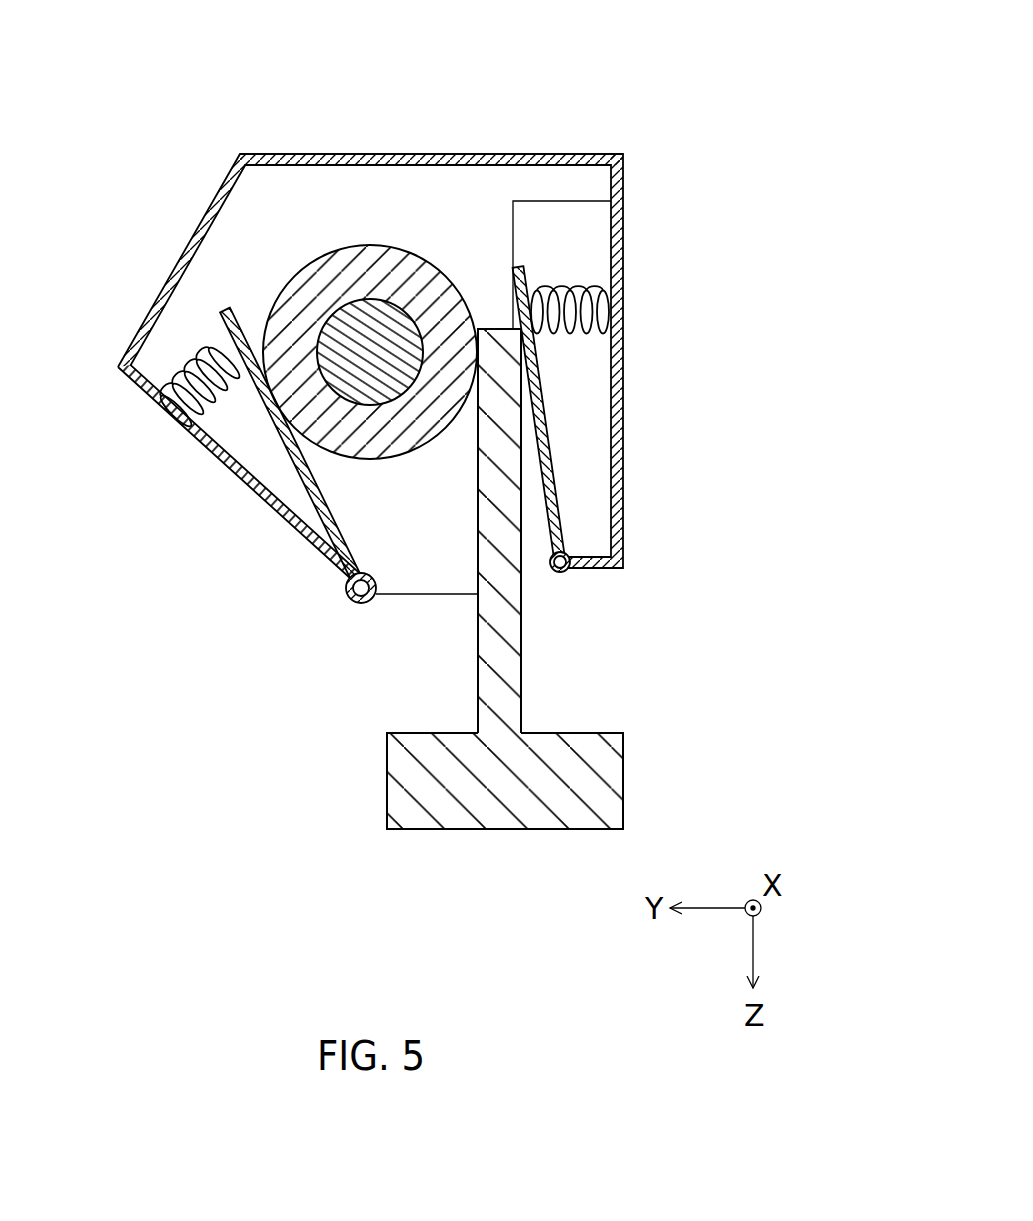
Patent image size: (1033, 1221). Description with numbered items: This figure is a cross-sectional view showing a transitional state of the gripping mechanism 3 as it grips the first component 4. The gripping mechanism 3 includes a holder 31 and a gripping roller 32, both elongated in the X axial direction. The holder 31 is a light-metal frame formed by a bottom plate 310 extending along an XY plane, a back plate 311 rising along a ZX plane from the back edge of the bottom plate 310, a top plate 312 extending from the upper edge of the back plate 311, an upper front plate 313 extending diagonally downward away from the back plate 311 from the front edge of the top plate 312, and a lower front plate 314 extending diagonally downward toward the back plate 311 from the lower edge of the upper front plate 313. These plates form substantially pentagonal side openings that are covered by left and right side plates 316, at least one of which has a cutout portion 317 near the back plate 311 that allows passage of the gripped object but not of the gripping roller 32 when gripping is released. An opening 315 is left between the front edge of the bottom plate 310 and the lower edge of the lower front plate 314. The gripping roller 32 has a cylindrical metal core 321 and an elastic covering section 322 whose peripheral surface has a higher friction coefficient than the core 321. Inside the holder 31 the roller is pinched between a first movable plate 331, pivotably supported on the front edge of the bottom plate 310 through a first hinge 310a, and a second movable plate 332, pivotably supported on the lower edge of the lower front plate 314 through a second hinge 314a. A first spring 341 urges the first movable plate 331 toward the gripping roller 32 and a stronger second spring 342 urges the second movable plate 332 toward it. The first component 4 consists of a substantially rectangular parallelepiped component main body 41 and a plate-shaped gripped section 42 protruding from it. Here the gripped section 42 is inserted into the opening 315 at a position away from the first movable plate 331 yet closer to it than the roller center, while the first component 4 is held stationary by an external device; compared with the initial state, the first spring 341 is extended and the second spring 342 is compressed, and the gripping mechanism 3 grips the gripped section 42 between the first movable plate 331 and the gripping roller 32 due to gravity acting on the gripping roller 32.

The gripping mechanism 3 is at (690, 107).
The holder 31 is at (184, 152).
The gripping roller 32 is at (340, 232).
The first component 4 is at (376, 766).
The component main body 41 is at (624, 780).
The gripped section 42 is at (478, 643).
The bottom plate 310 is at (605, 570).
The first hinge 310a is at (570, 578).
The back plate 311 is at (623, 312).
The top plate 312 is at (528, 153).
The upper front plate 313 is at (185, 251).
The lower front plate 314 is at (238, 482).
The second hinge 314a is at (350, 600).
The opening 315 is at (391, 623).
The side plate 316 is at (273, 195).
The cutout portion 317 is at (603, 212).
The core 321 is at (365, 348).
The covering section 322 is at (370, 270).
The first movable plate 331 is at (513, 272).
The second movable plate 332 is at (246, 340).
The first spring 341 is at (565, 280).
The second spring 342 is at (205, 348).